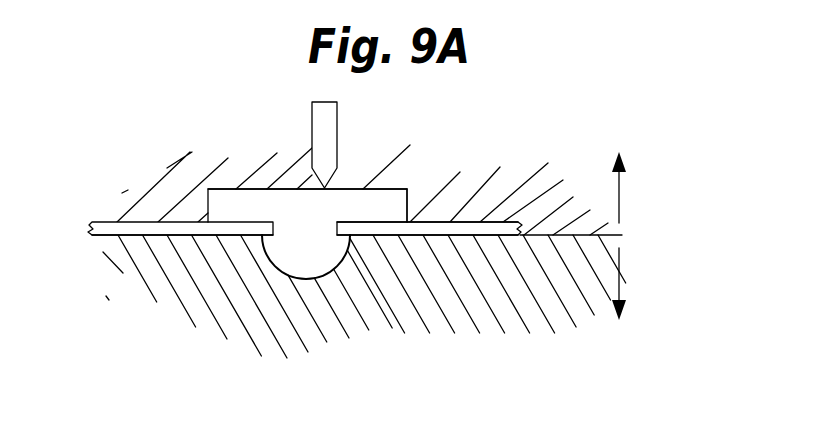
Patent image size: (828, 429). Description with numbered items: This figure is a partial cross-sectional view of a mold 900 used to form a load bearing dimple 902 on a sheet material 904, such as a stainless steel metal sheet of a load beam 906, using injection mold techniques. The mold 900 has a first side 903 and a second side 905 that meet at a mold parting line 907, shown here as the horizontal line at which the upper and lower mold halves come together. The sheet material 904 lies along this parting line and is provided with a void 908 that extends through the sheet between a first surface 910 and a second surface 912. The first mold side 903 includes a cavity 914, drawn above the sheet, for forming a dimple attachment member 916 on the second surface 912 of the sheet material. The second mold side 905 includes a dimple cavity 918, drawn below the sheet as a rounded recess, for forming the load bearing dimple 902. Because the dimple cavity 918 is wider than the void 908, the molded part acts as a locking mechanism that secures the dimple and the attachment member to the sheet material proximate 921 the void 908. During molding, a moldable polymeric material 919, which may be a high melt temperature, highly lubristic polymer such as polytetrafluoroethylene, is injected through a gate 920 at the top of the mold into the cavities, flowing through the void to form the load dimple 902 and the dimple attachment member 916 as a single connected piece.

The mold 900 is at (144, 133).
The load bearing dimple 902 is at (349, 263).
The first side 903 is at (642, 184).
The sheet material 904 is at (290, 247).
The second side 905 is at (642, 285).
The load beam 906 is at (195, 208).
The mold parting line 907 is at (636, 209).
The void 908 is at (275, 235).
The first surface 910 is at (486, 235).
The second surface 912 is at (482, 222).
The cavity 914 is at (236, 189).
The dimple attachment member 916 is at (376, 210).
The dimple cavity 918 is at (322, 276).
The moldable polymeric material 919 is at (282, 207).
The gate 920 is at (341, 155).
The proximate location 921 is at (338, 236).